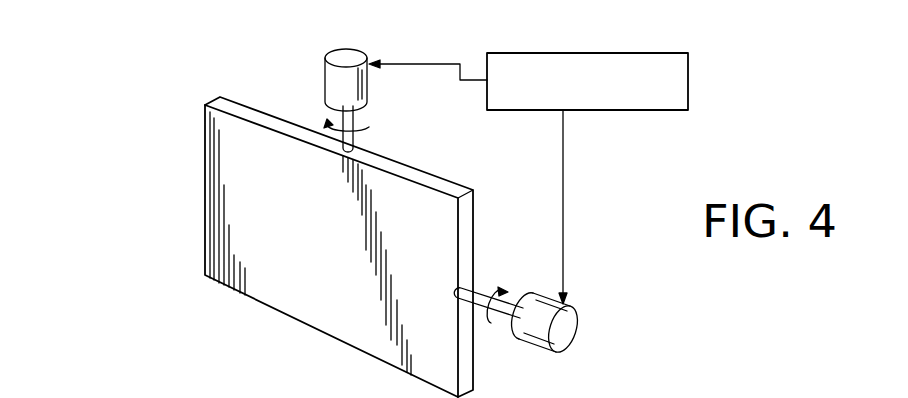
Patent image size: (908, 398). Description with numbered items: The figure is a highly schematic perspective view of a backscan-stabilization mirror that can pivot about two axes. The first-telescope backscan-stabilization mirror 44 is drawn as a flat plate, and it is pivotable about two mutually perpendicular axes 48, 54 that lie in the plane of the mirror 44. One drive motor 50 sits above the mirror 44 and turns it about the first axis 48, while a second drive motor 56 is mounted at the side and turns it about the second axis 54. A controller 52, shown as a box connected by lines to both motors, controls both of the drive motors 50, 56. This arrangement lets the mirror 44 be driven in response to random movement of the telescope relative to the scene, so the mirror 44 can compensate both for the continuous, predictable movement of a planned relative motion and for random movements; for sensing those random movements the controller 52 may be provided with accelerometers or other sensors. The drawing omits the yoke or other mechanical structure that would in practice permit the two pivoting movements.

The first-telescope backscan-stabilization mirror 44 is at (222, 234).
The first axis 48 is at (358, 120).
The drive motor 50 is at (325, 62).
The controller 52 is at (688, 66).
The second axis 54 is at (478, 290).
The drive motor 56 is at (578, 320).